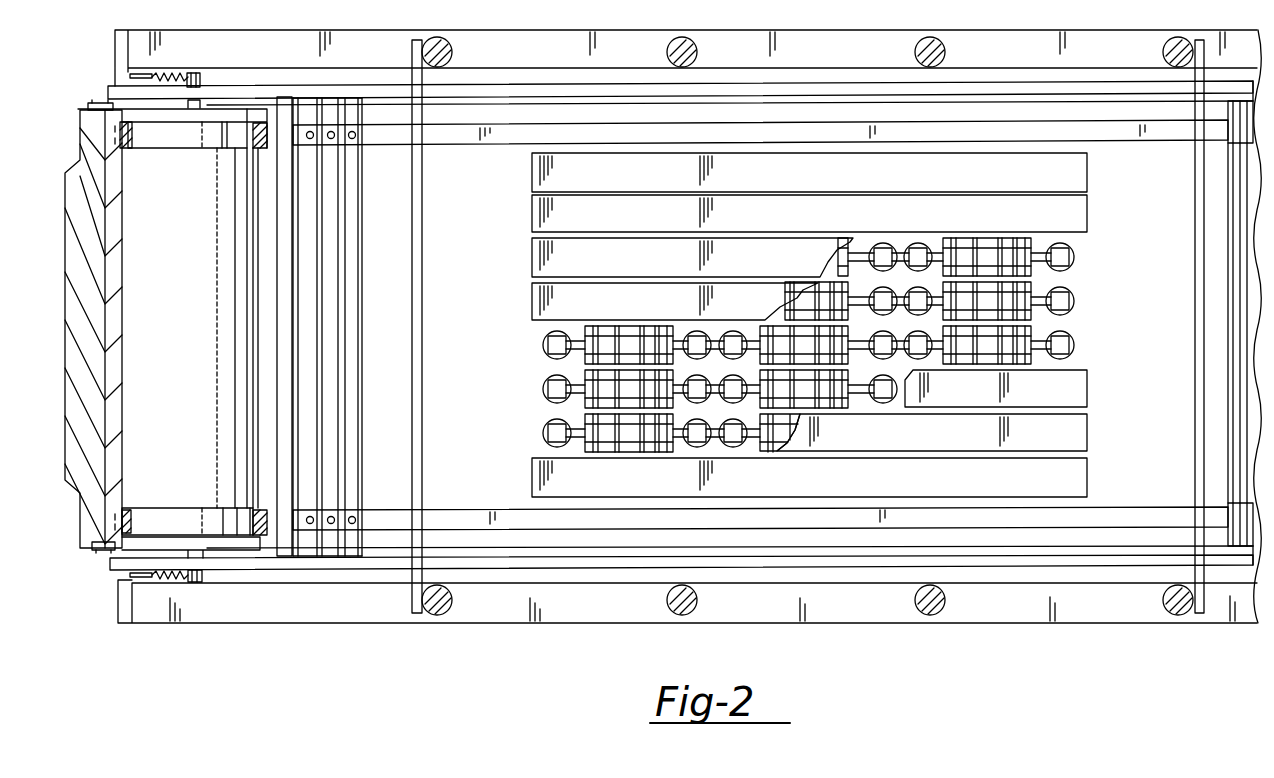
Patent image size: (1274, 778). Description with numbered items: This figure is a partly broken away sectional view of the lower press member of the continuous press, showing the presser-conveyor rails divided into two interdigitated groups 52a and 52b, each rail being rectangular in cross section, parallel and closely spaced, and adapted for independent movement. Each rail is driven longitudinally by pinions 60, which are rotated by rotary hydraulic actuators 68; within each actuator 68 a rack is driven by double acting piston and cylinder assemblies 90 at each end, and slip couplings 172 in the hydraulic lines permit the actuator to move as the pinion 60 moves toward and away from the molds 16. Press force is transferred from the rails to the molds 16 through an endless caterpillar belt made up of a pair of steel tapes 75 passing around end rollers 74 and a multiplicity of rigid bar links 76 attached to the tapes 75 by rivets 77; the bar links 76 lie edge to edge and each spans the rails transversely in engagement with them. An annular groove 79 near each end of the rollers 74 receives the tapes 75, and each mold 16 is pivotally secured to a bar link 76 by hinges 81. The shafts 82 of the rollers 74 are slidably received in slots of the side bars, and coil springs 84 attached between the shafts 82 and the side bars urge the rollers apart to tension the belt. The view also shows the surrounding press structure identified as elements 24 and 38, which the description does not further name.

The mold 16 is at (72, 333).
The housing plate 24 is at (578, 30).
The tie rod 38 is at (694, 40).
The presser-conveyor rail group 52a is at (530, 303).
The presser-conveyor rail group 52b is at (530, 258).
The pinion 60 is at (1033, 268).
The rotary hydraulic actuator 68 is at (1013, 346).
The end roller 74 is at (92, 103).
The steel tape 75 is at (451, 142).
The bar link 76 is at (122, 332).
The rivet 77 is at (133, 140).
The annular groove 79 is at (160, 508).
The hinge 81 is at (103, 552).
The roller shaft 82 is at (204, 578).
The coil spring 84 is at (163, 578).
The double acting piston and cylinder assembly 90 is at (1050, 313).
The slip coupling 172 is at (1067, 353).